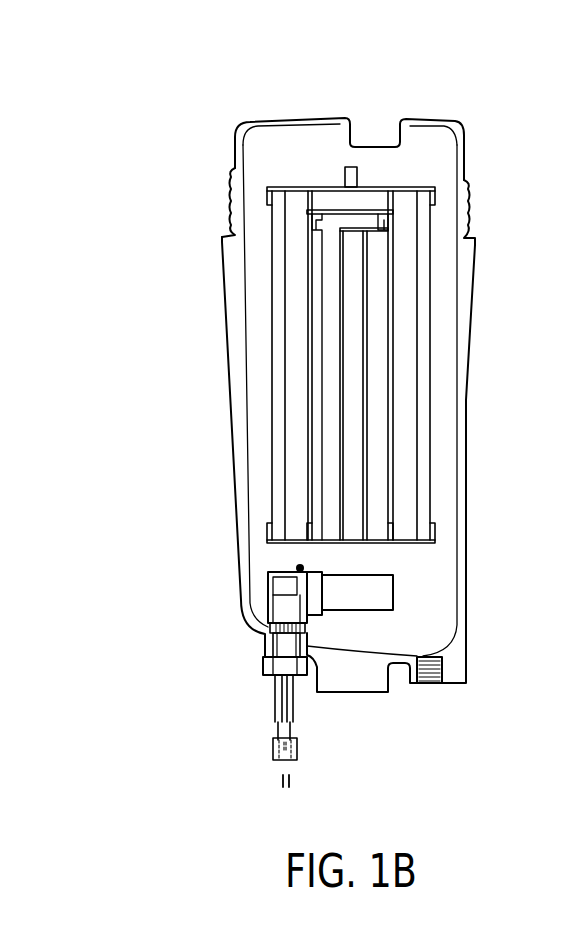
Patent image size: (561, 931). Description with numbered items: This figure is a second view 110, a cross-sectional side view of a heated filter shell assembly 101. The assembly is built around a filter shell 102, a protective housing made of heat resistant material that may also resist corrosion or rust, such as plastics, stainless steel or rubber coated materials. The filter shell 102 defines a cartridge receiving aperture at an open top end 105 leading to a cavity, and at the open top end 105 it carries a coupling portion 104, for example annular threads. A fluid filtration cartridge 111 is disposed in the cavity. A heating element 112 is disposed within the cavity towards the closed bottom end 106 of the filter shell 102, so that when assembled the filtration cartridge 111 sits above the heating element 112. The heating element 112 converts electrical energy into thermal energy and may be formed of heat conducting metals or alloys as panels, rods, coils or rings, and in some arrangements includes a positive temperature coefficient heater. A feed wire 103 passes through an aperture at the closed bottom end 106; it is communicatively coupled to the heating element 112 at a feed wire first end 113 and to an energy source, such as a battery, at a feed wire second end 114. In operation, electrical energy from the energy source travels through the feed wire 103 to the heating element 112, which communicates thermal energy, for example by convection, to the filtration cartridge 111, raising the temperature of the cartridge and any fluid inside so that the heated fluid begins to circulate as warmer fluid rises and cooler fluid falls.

The heated filter shell assembly 101 is at (271, 84).
The second view 110 is at (237, 93).
The open top end 105 is at (493, 172).
The coupling portion 104 is at (229, 192).
The filter shell 102 is at (237, 370).
The fluid filtration cartridge 111 is at (295, 352).
The closed bottom end 106 is at (490, 597).
The heating element 112 is at (377, 593).
The feed wire first end 113 is at (280, 684).
The feed wire 103 is at (287, 712).
The feed wire second end 114 is at (277, 785).